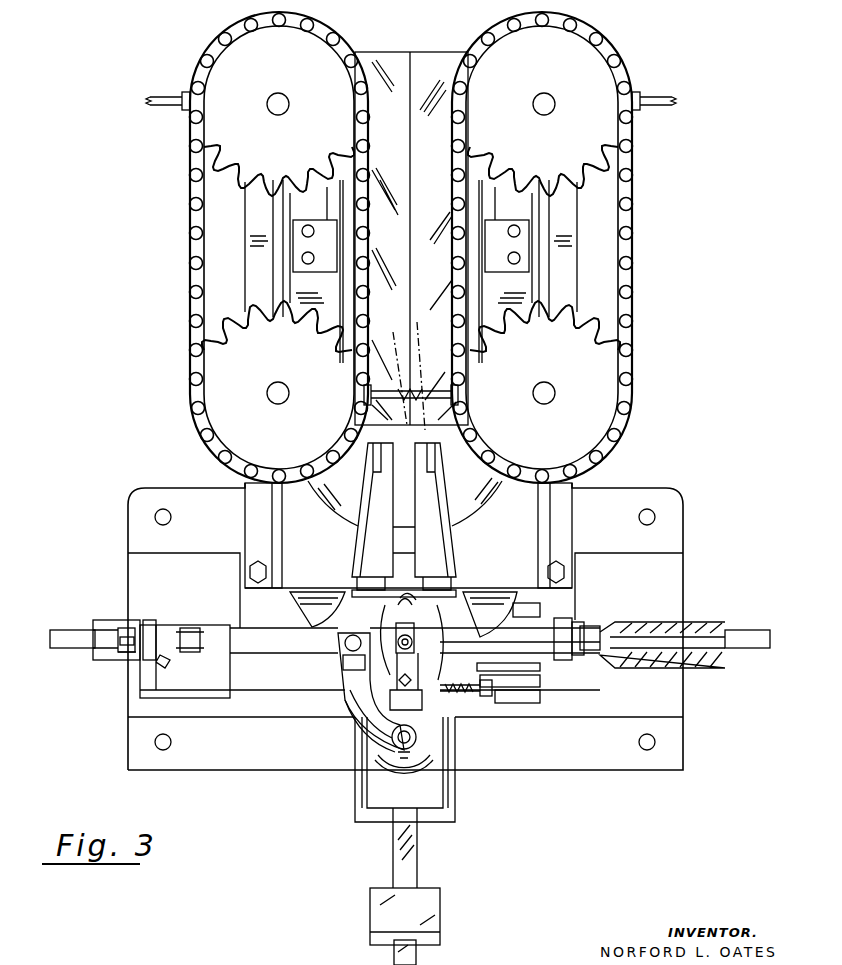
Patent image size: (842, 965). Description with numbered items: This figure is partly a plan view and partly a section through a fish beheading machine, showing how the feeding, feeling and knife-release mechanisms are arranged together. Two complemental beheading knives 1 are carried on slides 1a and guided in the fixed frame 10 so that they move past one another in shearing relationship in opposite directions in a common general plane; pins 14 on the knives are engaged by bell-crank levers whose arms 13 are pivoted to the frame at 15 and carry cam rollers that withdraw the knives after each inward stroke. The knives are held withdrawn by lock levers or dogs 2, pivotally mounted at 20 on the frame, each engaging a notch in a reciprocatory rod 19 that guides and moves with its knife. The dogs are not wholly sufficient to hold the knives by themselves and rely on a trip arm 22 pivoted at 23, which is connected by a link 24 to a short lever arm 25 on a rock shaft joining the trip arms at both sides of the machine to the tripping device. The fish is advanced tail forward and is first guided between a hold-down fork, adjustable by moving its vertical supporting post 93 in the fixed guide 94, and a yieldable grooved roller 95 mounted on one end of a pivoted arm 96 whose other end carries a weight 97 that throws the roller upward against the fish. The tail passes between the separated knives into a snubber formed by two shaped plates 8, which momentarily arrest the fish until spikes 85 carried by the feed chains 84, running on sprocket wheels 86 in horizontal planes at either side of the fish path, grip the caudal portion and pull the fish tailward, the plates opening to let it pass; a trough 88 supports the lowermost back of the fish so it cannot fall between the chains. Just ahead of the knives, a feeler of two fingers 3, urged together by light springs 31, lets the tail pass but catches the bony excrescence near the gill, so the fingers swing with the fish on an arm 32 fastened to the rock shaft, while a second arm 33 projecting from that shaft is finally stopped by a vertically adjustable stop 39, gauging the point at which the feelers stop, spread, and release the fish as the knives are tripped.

The beheading knives 1 is at (478, 600).
The slides 1a is at (587, 628).
The lock levers or dogs 2 is at (100, 631).
The feeler fingers 3 is at (412, 635).
The snubber plates 8 is at (440, 533).
The fixed frame 10 is at (592, 656).
The bell-crank lever arm 13 is at (578, 658).
The pins 14 is at (560, 662).
The bell-crank pivot 15 is at (508, 689).
The reciprocatory rod 19 is at (60, 637).
The lock lever pivot 20 is at (122, 622).
The trip arm 22 is at (118, 650).
The trip arm pivot 23 is at (192, 625).
The link 24 is at (148, 622).
The short lever arm 25 is at (148, 662).
The light springs 31 is at (470, 695).
The arm 32 is at (445, 712).
The second arm 33 is at (368, 672).
The vertically adjustable stop 39 is at (414, 630).
The feed chain 84 is at (372, 290).
The spikes 85 is at (652, 95).
The sprocket wheels 86 is at (607, 128).
The trough 88 is at (418, 60).
The vertical supporting post 93 is at (392, 742).
The fixed guide 94 is at (362, 722).
The grooved roller 95 is at (420, 775).
The pivoted arm 96 is at (410, 858).
The weight 97 is at (435, 915).